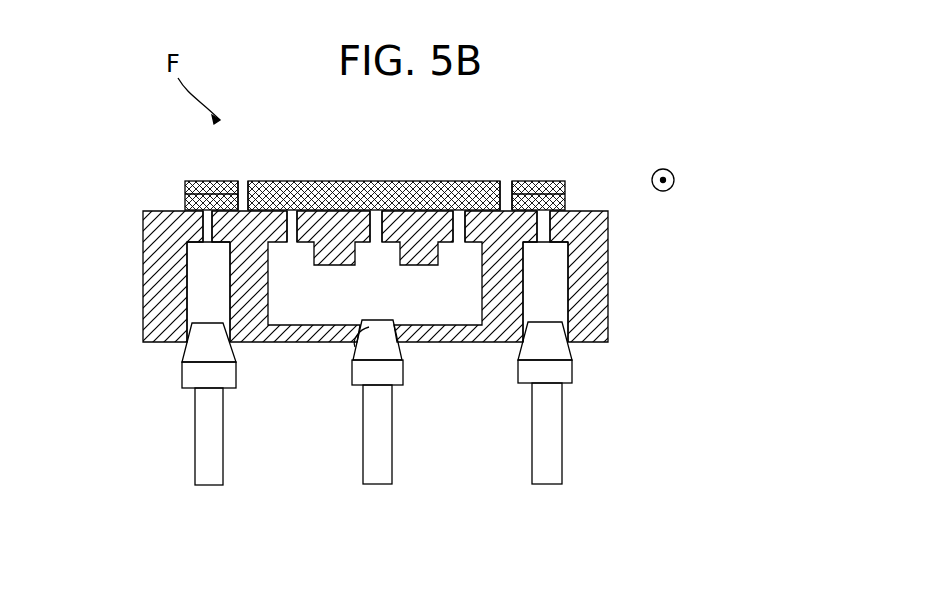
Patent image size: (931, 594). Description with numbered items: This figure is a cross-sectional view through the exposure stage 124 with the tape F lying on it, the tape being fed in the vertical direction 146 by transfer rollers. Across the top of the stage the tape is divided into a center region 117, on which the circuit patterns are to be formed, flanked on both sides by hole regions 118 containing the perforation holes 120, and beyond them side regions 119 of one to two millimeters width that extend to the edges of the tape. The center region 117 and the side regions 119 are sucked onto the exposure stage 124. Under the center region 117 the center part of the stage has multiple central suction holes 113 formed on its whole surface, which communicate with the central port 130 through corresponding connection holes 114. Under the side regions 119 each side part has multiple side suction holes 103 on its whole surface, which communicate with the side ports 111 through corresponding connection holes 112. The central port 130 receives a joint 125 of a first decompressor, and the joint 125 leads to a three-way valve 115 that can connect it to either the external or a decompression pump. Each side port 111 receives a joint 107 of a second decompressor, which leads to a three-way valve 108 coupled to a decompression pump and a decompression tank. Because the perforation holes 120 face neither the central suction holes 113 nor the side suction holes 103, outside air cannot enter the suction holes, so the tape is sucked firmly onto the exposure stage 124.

The side suction holes 103 is at (203, 227).
The joint 107 is at (182, 378).
The three-way valve 108 is at (210, 480).
The side ports 111 is at (200, 308).
The connection holes 112 is at (205, 257).
The central suction holes 113 is at (293, 237).
The connection holes 114 is at (303, 263).
The three-way valve 115 is at (378, 480).
The center region 117 is at (500, 173).
The hole regions 118 is at (243, 178).
The side regions 119 is at (238, 173).
The perforation holes 120 is at (186, 192).
The exposure stage 124 is at (160, 203).
The joint 125 is at (398, 377).
The central port 130 is at (355, 347).
The vertical direction 146 is at (674, 176).